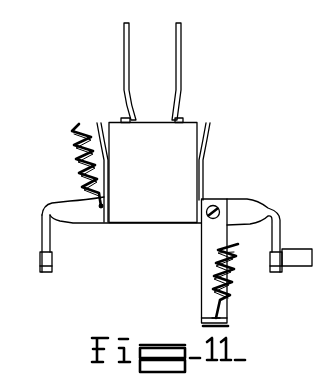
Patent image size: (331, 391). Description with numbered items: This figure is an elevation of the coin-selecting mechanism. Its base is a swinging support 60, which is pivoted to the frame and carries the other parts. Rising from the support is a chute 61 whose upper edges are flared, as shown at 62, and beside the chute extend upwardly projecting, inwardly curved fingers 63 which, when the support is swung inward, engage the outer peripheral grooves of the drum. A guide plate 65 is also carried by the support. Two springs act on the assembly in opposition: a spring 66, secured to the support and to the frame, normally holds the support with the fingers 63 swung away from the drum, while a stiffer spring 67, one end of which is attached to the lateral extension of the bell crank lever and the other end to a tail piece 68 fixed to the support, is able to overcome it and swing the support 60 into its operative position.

The swinging support 60 is at (93, 223).
The chute 61 is at (153, 173).
The flared upper edges 62 is at (100, 123).
The fingers 63 is at (176, 31).
The guide plate 65 is at (181, 111).
The spring 66 is at (78, 127).
The stiffer spring 67 is at (238, 262).
The tail piece 68 is at (202, 267).